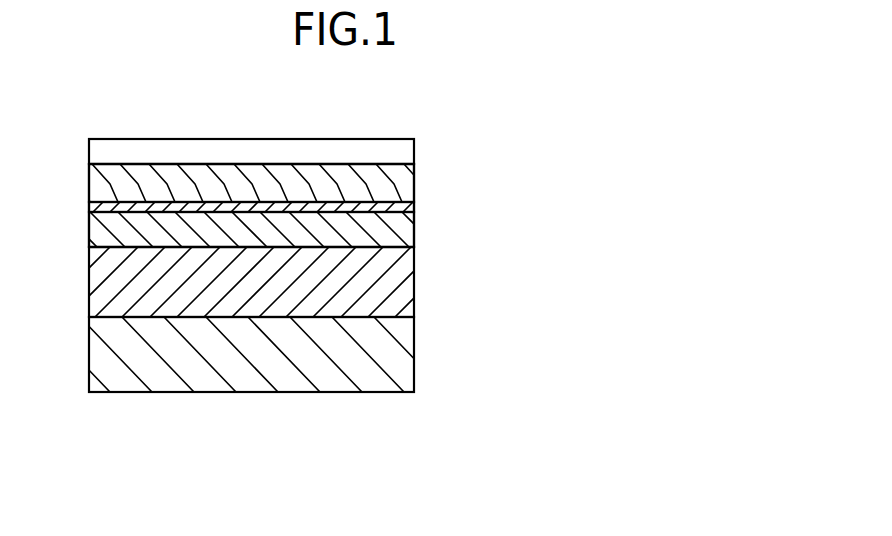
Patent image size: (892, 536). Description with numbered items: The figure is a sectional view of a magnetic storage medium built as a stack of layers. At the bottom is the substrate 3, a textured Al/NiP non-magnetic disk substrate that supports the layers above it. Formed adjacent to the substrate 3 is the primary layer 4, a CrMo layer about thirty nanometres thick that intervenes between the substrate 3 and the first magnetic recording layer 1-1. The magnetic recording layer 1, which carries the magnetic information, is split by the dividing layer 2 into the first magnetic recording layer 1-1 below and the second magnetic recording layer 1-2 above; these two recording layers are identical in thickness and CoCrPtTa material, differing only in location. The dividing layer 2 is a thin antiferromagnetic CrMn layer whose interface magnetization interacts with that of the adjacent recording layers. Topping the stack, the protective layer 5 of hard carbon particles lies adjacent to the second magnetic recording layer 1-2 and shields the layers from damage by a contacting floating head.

The magnetic recording layer 1 is at (89, 266).
The first magnetic recording layer 1-1 is at (414, 235).
The second magnetic recording layer 1-2 is at (414, 175).
The dividing layer 2 is at (414, 209).
The substrate 3 is at (414, 337).
The primary layer 4 is at (414, 300).
The protective layer 5 is at (414, 139).